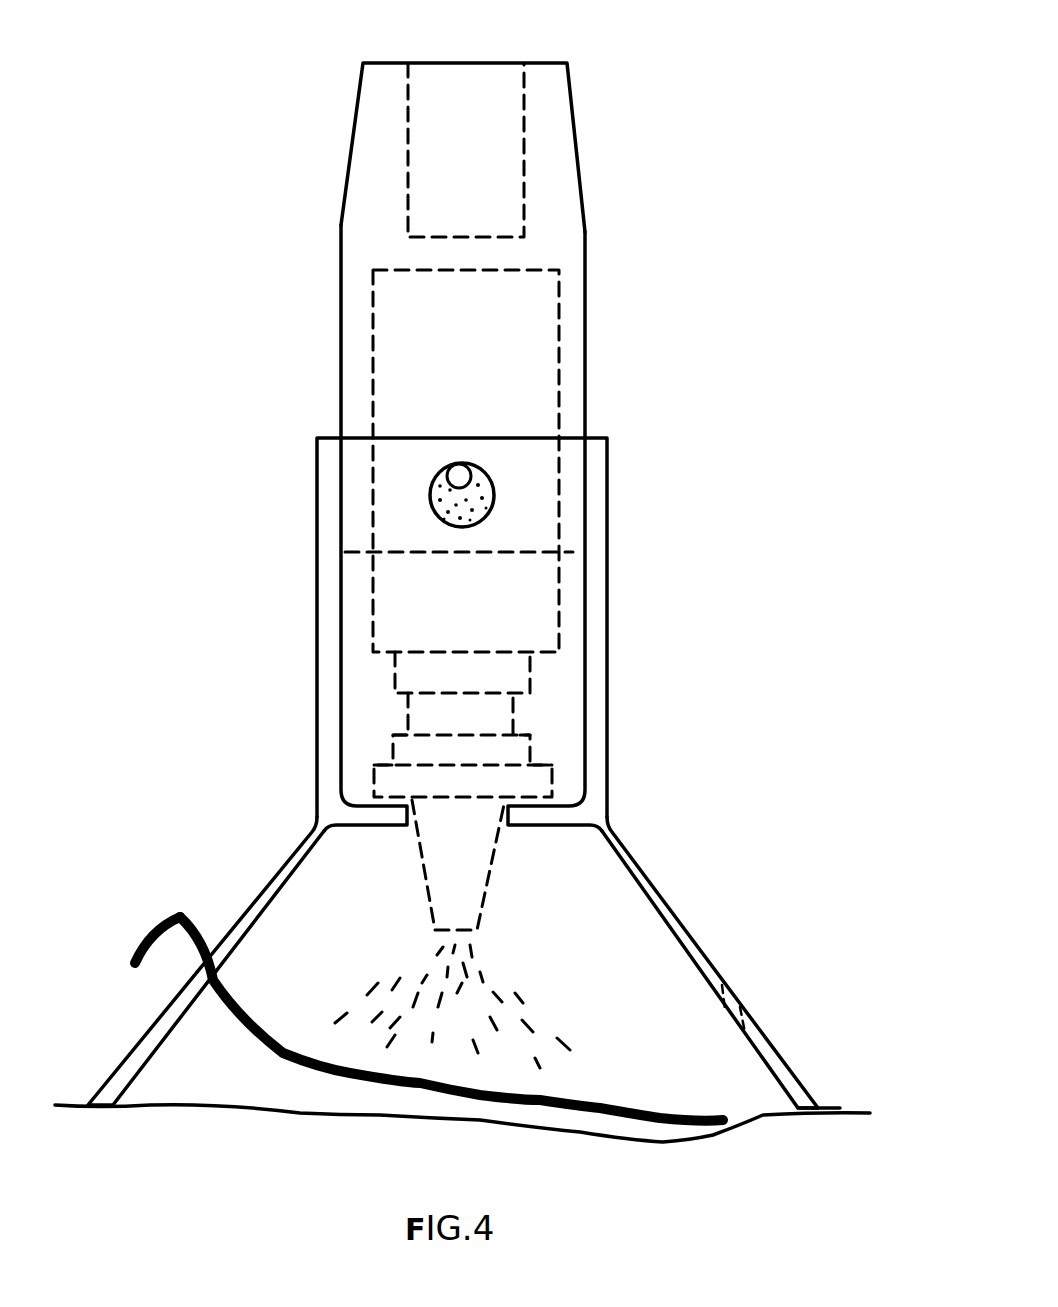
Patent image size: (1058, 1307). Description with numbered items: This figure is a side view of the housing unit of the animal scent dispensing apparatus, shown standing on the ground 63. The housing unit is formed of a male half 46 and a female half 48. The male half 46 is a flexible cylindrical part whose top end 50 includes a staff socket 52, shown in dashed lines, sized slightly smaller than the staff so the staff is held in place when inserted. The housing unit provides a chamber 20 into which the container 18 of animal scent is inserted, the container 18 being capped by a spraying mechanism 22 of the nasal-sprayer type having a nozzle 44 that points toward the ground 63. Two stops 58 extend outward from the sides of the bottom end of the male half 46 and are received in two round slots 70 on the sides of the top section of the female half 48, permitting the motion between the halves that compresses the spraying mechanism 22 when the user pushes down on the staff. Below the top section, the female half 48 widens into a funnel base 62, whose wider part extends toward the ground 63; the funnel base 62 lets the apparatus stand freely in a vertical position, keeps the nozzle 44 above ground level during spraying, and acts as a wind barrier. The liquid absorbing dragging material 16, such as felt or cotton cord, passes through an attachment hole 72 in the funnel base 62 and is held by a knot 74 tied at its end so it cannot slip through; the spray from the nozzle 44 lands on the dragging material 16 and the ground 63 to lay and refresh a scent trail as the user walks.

The liquid absorbing dragging material 16 is at (672, 1133).
The container 18 is at (494, 353).
The chamber 20 is at (552, 740).
The spraying mechanism 22 is at (530, 675).
The nozzle 44 is at (483, 892).
The male half 46 is at (301, 253).
The female half 48 is at (279, 667).
The top end 50 is at (585, 78).
The staff socket 52 is at (477, 123).
The stops 58 is at (470, 465).
The funnel base 62 is at (683, 938).
The ground 63 is at (840, 1117).
The round slots 70 is at (473, 507).
The attachment hole 72 is at (197, 957).
The knot 74 is at (173, 910).